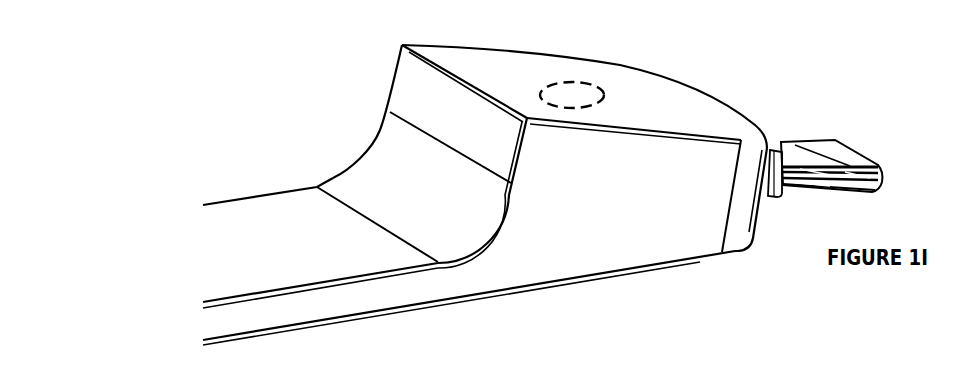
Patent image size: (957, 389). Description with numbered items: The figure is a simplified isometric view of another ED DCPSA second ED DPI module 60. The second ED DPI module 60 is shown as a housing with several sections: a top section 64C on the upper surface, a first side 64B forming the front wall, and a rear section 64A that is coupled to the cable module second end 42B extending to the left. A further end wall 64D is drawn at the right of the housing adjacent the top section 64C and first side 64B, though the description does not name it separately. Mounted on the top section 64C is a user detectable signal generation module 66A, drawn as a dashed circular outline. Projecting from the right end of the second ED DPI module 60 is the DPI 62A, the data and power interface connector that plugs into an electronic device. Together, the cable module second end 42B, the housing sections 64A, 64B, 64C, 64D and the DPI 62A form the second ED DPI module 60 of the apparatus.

The second ED DPI module 60 is at (748, 330).
The cable module second end 42B is at (258, 208).
The DPI 62A is at (843, 156).
The rear section 64A is at (367, 167).
The first side 64B is at (575, 212).
The top section 64C is at (622, 72).
The end wall of housing 64D is at (725, 104).
The user detectable signal generation module 66A is at (572, 91).